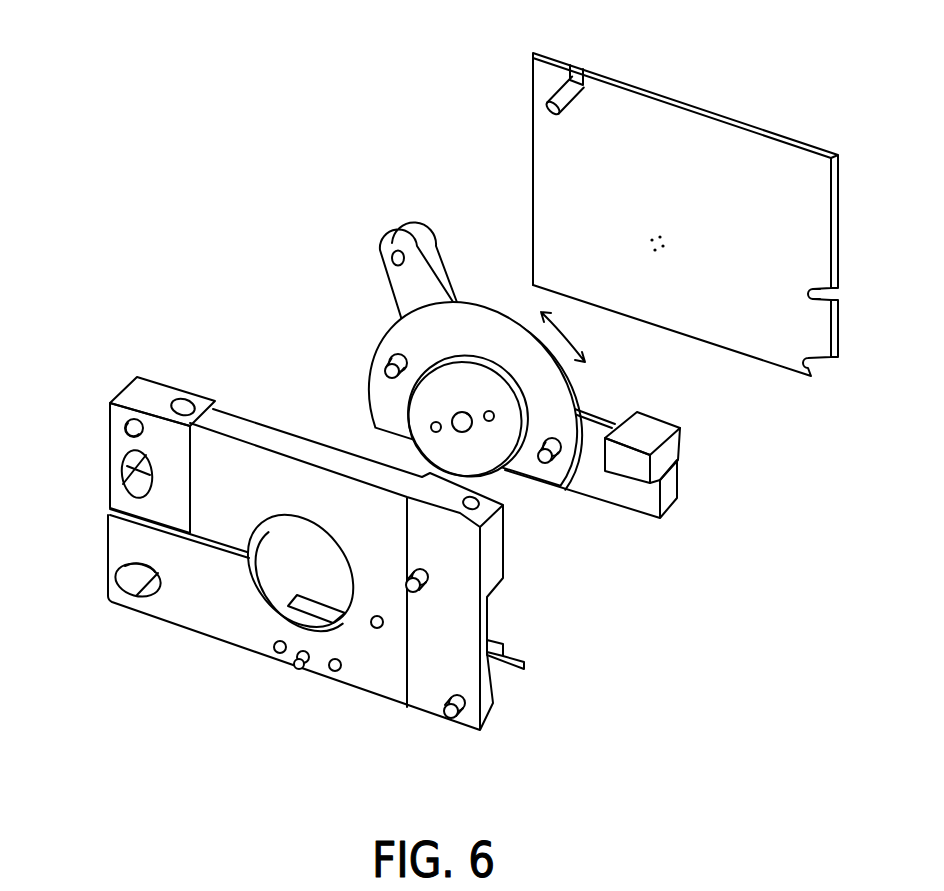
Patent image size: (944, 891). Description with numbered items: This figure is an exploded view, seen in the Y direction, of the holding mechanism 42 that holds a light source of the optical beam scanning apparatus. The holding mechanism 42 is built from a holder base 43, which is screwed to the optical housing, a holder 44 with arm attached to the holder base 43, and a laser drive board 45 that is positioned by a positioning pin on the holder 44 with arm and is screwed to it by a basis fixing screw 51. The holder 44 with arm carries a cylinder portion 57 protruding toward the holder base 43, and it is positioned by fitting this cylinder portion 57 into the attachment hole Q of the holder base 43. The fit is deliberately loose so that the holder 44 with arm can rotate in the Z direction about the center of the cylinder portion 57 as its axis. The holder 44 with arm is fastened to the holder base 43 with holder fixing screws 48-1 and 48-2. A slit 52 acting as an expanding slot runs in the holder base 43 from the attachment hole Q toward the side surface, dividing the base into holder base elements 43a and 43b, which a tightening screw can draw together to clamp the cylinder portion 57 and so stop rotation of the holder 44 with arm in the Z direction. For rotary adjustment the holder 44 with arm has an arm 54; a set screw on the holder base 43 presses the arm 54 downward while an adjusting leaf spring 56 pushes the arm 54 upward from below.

The holding mechanism 42 is at (447, 371).
The holder base 43 is at (287, 553).
The holder base element 43a is at (108, 487).
The holder base element 43b is at (306, 569).
The holder with arm 44 is at (616, 444).
The laser drive board 45 is at (712, 194).
The holder fixing screw 48-1 is at (546, 466).
The holder fixing screw 48-2 is at (383, 370).
The basis fixing screw 51 is at (580, 63).
The slit 52 is at (107, 534).
The arm for rotary adjustment 54 is at (650, 425).
The adjusting leaf spring 56 is at (527, 660).
The cylinder portion 57 is at (503, 473).
The attachment hole Q is at (286, 581).
The Z direction Z is at (563, 337).